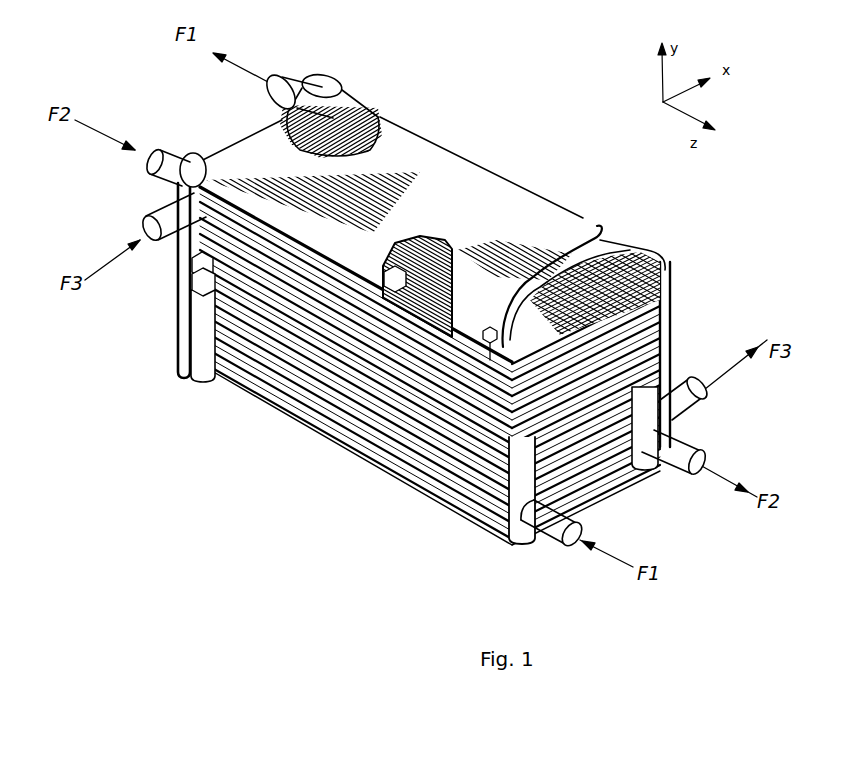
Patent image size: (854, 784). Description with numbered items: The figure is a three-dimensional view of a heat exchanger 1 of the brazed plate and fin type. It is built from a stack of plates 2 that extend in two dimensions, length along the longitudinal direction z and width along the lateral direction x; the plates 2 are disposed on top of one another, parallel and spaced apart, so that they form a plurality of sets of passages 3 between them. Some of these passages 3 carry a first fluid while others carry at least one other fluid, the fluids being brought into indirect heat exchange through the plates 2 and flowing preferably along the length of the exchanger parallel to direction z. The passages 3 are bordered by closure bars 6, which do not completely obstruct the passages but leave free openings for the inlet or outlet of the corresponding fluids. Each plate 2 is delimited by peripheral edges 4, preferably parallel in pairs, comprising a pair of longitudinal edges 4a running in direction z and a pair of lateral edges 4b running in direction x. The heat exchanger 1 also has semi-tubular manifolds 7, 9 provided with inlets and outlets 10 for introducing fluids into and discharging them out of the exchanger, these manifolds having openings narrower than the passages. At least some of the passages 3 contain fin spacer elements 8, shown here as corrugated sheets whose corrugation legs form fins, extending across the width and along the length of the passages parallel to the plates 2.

The heat exchanger 1 is at (262, 432).
The plates 2 is at (546, 222).
The passages 3 is at (180, 253).
The peripheral edges 4 is at (672, 343).
The longitudinal edges 4a is at (467, 153).
The lateral edges 4b is at (240, 135).
The closure bars 6 is at (357, 98).
The semi-tubular manifold 7 is at (526, 540).
The fin spacer elements 8 is at (450, 240).
The semi-tubular manifold 9 is at (178, 356).
The inlets and outlets 10 is at (168, 160).